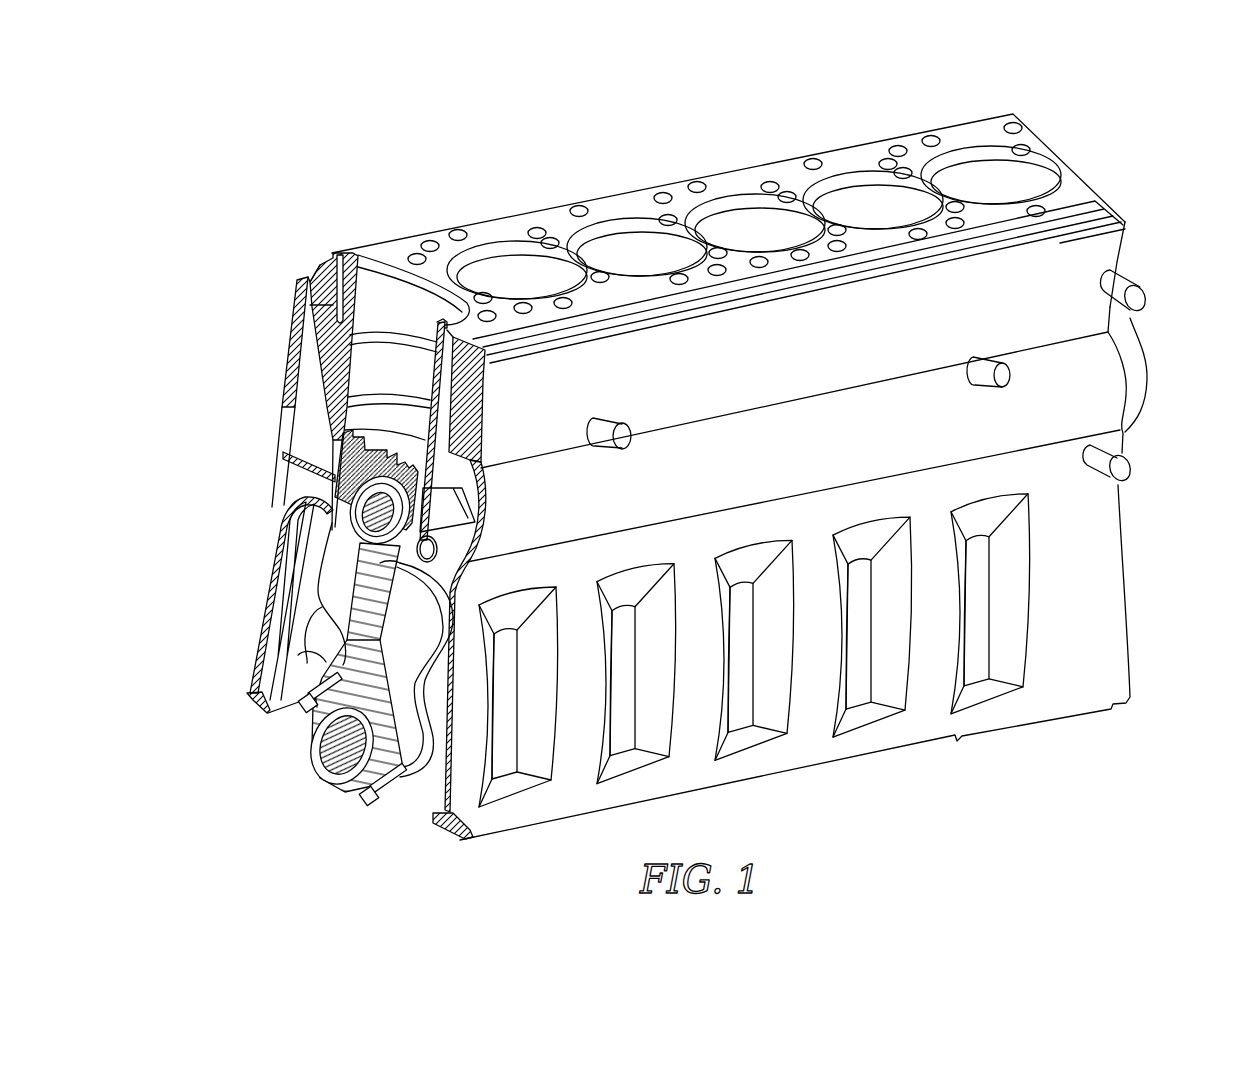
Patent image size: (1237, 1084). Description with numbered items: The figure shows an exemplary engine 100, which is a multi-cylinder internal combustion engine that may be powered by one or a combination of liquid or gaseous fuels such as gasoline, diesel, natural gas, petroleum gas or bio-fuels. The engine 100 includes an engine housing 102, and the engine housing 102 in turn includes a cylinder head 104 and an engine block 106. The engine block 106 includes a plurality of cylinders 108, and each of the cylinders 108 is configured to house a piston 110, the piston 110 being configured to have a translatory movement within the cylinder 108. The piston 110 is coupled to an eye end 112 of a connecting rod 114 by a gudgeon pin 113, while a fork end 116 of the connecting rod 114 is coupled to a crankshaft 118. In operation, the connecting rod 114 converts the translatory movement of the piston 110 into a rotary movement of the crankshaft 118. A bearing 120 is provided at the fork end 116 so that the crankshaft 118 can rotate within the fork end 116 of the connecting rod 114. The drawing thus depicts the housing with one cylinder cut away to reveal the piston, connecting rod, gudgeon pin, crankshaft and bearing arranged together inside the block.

The engine 100 is at (360, 158).
The engine housing 102 is at (1120, 264).
The cylinder head 104 is at (622, 195).
The engine block 106 is at (1093, 547).
The cylinders 108 is at (383, 353).
The piston 110 is at (340, 447).
The eye end 112 is at (358, 545).
The gudgeon pin 113 is at (352, 522).
The connecting rod 114 is at (357, 632).
The fork end 116 is at (312, 708).
The crankshaft 118 is at (323, 770).
The bearing 120 is at (315, 728).